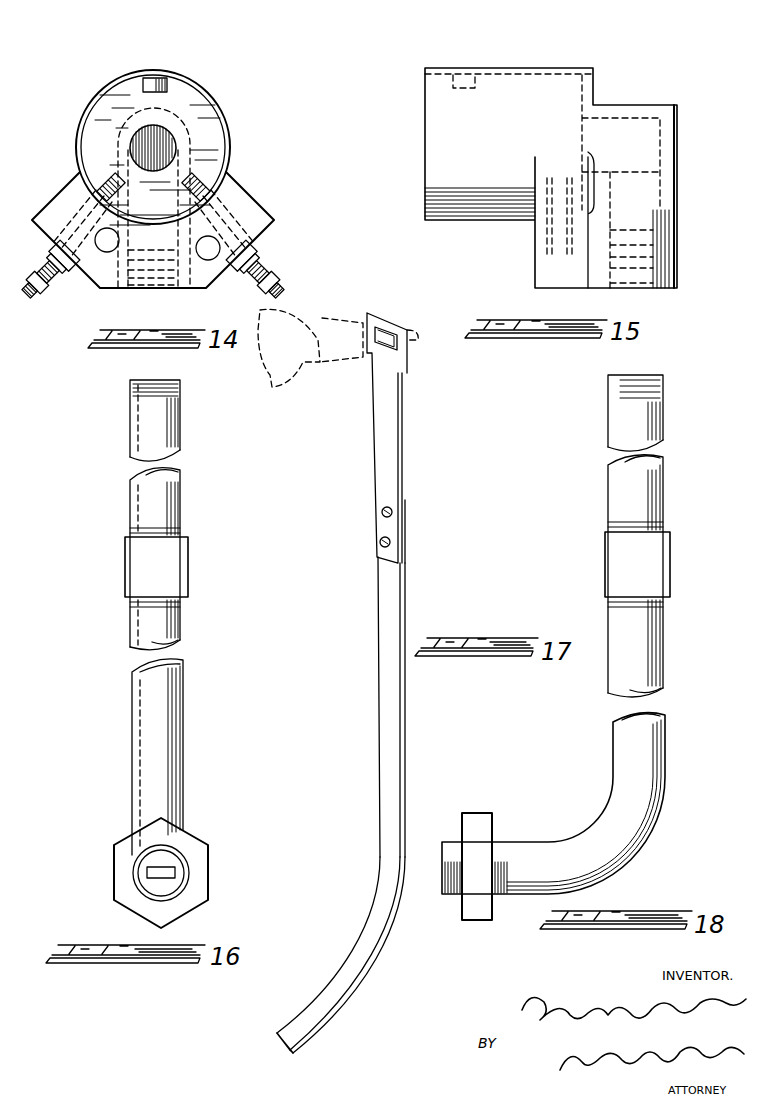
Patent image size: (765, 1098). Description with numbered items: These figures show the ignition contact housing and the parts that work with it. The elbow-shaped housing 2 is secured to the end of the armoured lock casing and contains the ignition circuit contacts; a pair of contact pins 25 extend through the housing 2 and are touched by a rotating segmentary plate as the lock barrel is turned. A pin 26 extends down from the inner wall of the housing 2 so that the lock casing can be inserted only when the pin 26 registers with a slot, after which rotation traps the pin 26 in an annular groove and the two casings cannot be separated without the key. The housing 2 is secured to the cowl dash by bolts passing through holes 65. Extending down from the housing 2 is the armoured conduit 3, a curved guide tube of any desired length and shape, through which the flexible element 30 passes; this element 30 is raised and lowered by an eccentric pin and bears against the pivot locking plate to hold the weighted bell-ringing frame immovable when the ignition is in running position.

In FIG. 14, the elbow-shaped housing 2 is at (227, 117).
In FIG. 15, the elbow-shaped housing 2 is at (557, 82).
In FIG. 16, the armoured conduit 3 is at (167, 698).
In FIG. 18, the armoured conduit 3 is at (650, 645).
In FIG. 14, the contact pins 25 is at (110, 180).
In FIG. 14, the pin 26 is at (163, 83).
In FIG. 15, the pin 26 is at (488, 67).
In FIG. 17, the flexible element 30 is at (383, 423).
In FIG. 14, the holes 65 is at (107, 250).
In FIG. 15, the holes 65 is at (547, 230).